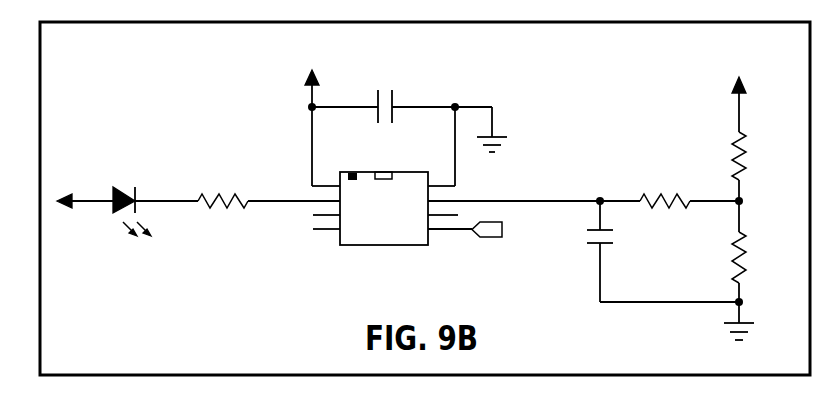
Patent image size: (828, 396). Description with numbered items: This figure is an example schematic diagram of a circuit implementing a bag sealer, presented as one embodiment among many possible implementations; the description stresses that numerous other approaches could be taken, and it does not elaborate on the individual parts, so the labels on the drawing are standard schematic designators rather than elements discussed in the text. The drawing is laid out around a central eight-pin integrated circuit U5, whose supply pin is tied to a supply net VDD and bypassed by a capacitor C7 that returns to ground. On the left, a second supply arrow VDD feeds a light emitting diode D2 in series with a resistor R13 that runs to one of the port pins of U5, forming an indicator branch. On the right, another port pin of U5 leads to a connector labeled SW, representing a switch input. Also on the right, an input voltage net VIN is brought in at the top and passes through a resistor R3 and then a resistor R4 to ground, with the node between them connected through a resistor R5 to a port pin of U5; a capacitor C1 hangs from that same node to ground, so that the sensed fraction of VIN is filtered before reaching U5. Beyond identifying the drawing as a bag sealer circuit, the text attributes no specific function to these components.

The supply voltage net VDD is at (188, 128).
The light emitting diode D2 is at (118, 211).
The resistor R13 330R R13 is at (220, 206).
The microcontroller U5 is at (382, 197).
The decoupling capacitor C7 104 C7 is at (379, 105).
The switch connector SW is at (503, 234).
The capacitor C1 103 C1 is at (614, 241).
The resistor R5 10k R5 is at (665, 206).
The input voltage net VIN is at (733, 75).
The resistor R3 10k 1% R3 is at (758, 162).
The resistor R4 10k 1% R4 is at (758, 262).